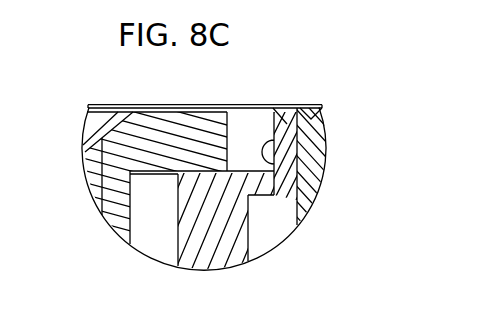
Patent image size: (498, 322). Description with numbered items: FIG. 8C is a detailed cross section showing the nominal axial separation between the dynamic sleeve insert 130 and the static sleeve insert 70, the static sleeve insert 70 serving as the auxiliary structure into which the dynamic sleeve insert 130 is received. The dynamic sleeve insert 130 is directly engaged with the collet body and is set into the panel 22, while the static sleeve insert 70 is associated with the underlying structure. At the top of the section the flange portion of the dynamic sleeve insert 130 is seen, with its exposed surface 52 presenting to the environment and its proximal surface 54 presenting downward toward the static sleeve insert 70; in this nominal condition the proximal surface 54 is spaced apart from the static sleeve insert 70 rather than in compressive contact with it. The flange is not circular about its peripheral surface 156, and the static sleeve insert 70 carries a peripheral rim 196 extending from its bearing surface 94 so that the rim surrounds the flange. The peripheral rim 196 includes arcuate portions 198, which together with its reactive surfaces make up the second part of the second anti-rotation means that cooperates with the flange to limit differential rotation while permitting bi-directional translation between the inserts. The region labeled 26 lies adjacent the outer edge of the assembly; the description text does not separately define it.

The panel 22 is at (305, 150).
The wedge seal 26 is at (92, 127).
The exposed surface 52 is at (174, 110).
The proximal surface 54 is at (160, 173).
The static sleeve insert 70 is at (223, 266).
The bearing surface 94 is at (233, 192).
The dynamic sleeve insert 130 is at (97, 204).
The peripheral surface 156 is at (231, 130).
The peripheral rim 196 is at (302, 122).
The arcuate portions 198 is at (296, 168).